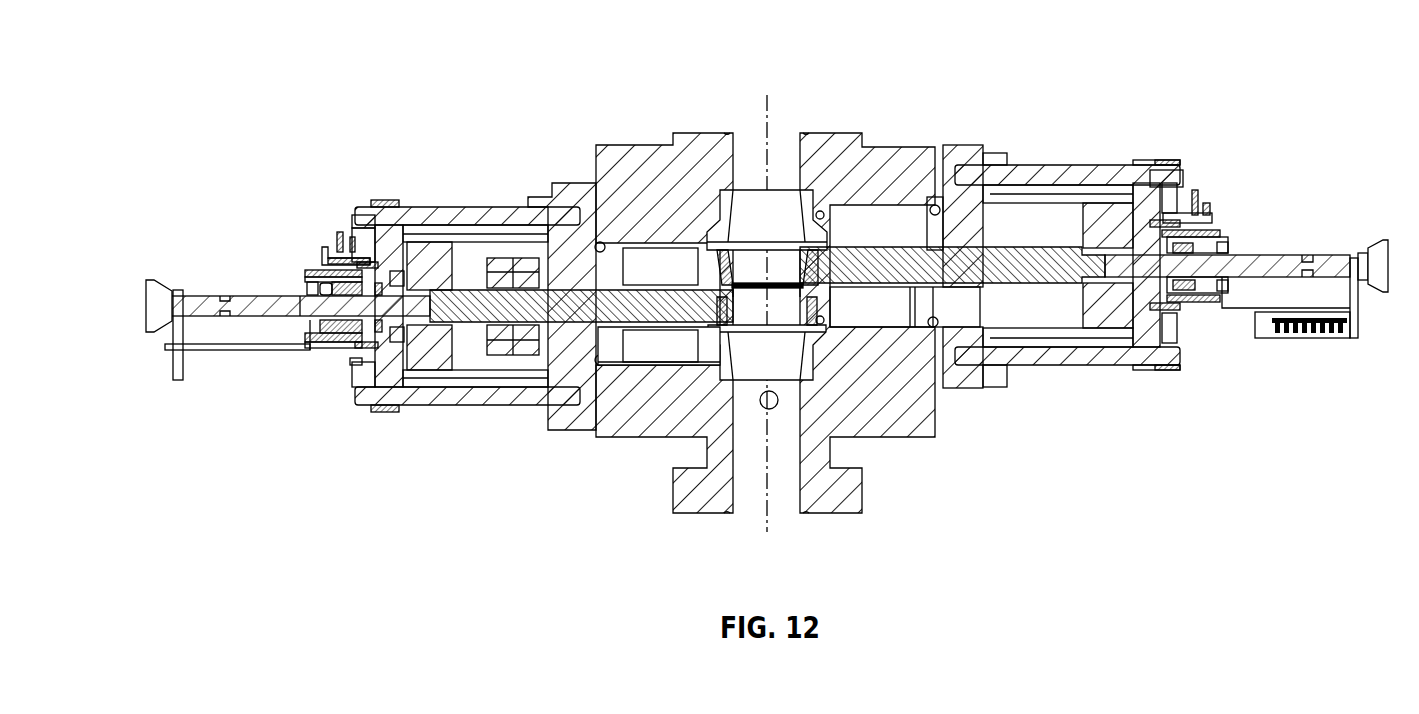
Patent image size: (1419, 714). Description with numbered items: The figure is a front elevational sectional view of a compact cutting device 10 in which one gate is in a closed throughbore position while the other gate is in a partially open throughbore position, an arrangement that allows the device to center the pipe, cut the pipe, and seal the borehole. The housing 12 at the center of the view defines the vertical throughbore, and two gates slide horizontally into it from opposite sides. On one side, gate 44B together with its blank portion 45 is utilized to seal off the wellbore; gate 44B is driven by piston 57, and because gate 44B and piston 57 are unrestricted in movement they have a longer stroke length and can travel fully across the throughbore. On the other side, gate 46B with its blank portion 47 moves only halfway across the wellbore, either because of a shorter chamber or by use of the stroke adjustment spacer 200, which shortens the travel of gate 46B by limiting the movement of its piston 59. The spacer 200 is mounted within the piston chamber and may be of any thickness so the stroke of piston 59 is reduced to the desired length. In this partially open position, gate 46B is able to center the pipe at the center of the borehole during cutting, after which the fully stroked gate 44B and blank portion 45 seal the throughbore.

The compact cutting device 10 is at (1027, 102).
The housing 12 is at (638, 172).
The gate 44B is at (832, 240).
The blank portion 45 is at (890, 247).
The gate 46B is at (600, 335).
The blank portion 47 is at (660, 312).
The piston 57 is at (1100, 215).
The piston 59 is at (438, 245).
The stroke adjustment spacer 200 is at (507, 272).